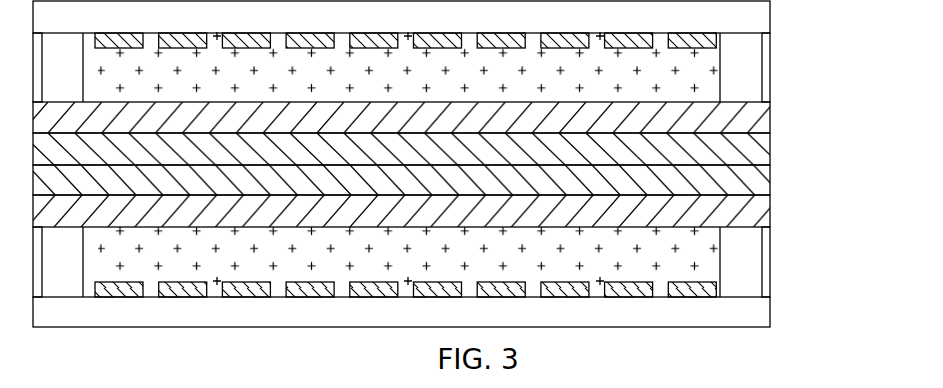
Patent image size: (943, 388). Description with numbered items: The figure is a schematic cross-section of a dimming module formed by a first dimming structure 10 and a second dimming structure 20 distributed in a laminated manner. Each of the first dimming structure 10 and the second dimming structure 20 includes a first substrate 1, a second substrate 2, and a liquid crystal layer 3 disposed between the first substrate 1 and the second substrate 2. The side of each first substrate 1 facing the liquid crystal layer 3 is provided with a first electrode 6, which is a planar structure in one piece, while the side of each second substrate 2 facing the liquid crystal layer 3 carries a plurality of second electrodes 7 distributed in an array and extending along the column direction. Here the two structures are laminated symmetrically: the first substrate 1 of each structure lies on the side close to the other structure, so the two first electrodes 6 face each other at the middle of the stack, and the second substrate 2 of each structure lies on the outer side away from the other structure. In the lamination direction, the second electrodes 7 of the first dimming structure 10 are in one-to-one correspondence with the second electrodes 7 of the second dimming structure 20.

The first substrate 1 is at (732, 153).
The second substrate 2 is at (740, 17).
The liquid crystal layer 3 is at (697, 88).
The first electrode 6 is at (733, 127).
The second electrodes 7 is at (720, 35).
The first dimming structure 10 is at (857, 13).
The second dimming structure 20 is at (857, 187).